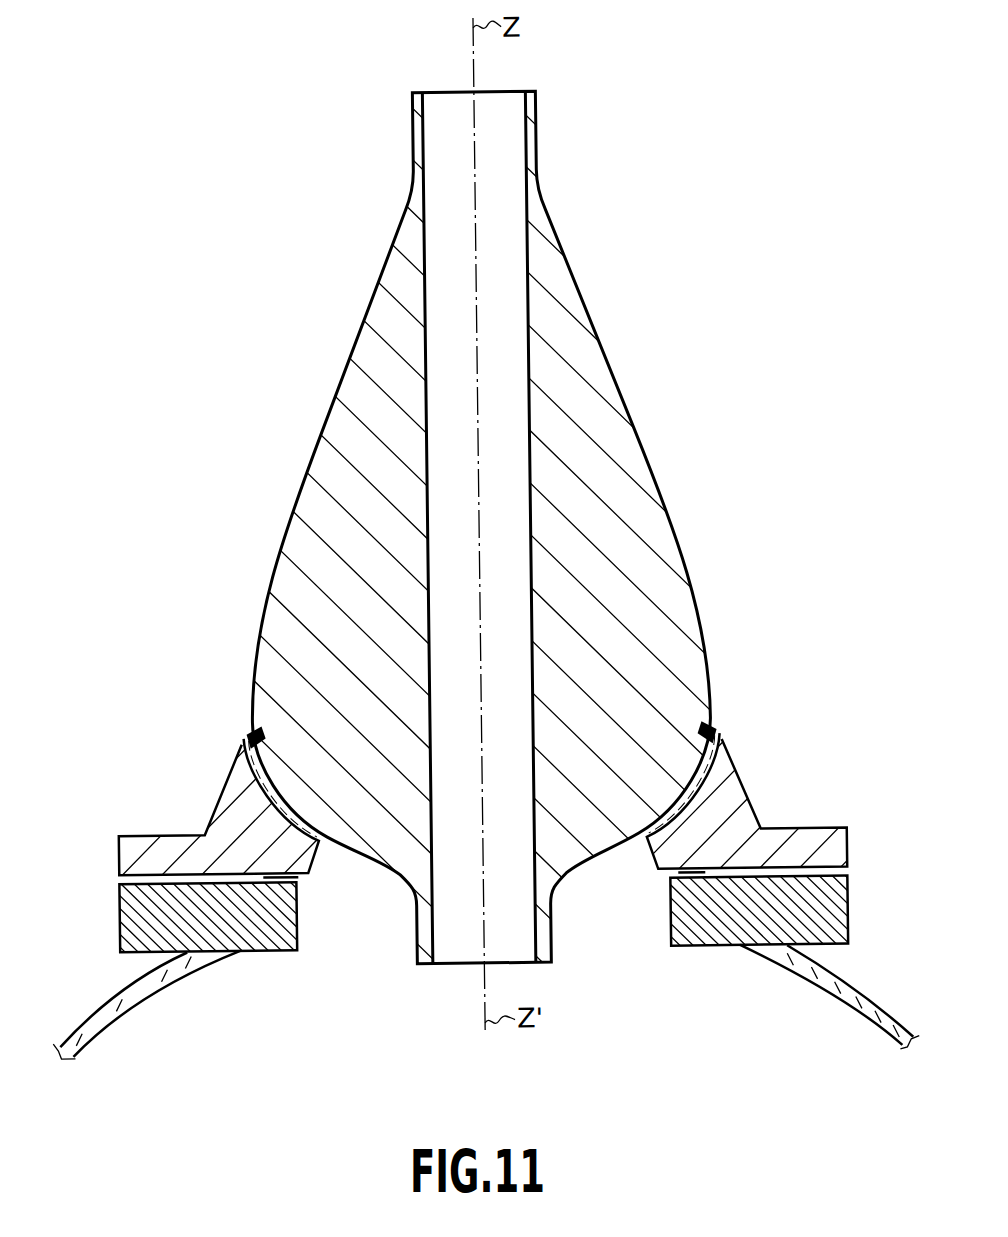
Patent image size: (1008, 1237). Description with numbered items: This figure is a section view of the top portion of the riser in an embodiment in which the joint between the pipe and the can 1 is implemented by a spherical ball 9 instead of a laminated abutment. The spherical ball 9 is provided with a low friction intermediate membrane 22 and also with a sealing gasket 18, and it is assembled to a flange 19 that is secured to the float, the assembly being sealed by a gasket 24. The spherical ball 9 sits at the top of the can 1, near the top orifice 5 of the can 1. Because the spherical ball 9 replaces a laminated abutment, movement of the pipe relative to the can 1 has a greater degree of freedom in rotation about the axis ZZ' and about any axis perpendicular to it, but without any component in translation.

The spherical ball 9 is at (162, 429).
The sealing gasket 18 is at (229, 705).
The low friction intermediate membrane 22 is at (227, 770).
The gasket 24 is at (484, 904).
The flange 19 is at (356, 892).
The top orifice 5 is at (615, 967).
The can 1 is at (299, 1026).